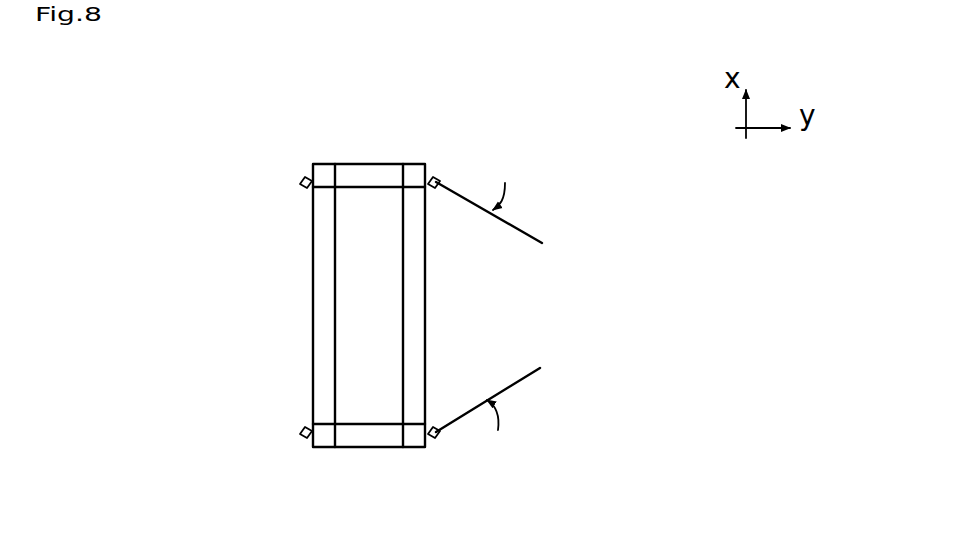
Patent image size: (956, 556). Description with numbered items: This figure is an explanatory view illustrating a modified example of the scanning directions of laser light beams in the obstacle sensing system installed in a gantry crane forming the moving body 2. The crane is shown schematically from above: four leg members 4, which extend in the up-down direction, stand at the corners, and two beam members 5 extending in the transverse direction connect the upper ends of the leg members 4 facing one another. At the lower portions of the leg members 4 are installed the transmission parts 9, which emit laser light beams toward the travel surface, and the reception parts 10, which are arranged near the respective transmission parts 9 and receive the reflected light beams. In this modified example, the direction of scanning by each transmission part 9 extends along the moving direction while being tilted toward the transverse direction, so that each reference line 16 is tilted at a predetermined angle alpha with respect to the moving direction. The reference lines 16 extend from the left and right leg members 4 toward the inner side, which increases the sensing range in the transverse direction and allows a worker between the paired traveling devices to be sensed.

The moving body 2 is at (173, 268).
The leg members 4 is at (320, 164).
The beam members 5 is at (313, 301).
The transmission parts 9 is at (357, 306).
The reception parts 10 is at (436, 177).
The reference line 16 is at (478, 207).